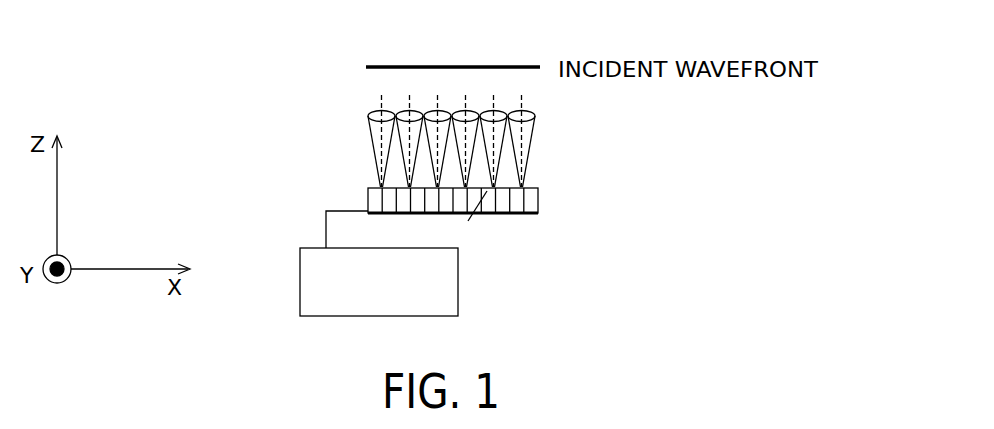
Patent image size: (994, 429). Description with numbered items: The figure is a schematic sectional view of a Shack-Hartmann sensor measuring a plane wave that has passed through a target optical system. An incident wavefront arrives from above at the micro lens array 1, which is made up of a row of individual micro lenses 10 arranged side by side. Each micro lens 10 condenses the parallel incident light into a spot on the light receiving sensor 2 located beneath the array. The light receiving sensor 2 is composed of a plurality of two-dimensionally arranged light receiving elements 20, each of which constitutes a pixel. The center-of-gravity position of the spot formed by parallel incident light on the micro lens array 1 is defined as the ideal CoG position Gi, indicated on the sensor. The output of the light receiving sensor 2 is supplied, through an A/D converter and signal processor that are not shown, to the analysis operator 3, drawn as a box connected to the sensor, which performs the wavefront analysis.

The micro lens array 1 is at (492, 135).
The micro lens 10 is at (409, 108).
The light receiving sensor 2 is at (612, 220).
The light receiving element 20 is at (538, 210).
The analysis operator 3 is at (300, 262).
The ideal CoG position Gi is at (473, 217).